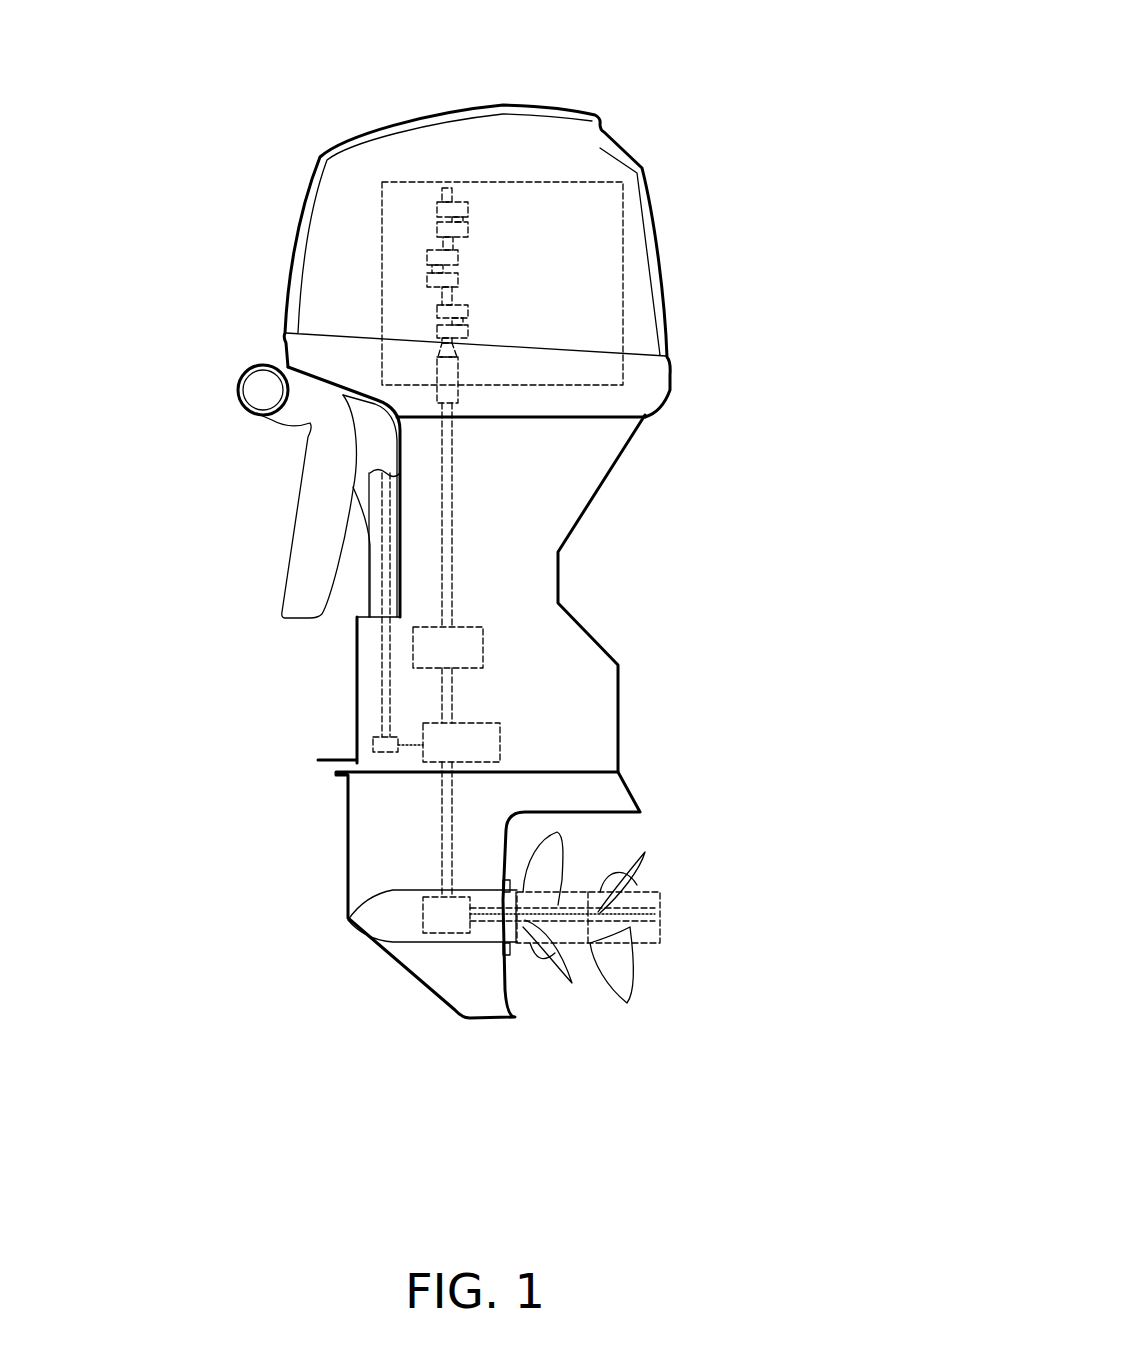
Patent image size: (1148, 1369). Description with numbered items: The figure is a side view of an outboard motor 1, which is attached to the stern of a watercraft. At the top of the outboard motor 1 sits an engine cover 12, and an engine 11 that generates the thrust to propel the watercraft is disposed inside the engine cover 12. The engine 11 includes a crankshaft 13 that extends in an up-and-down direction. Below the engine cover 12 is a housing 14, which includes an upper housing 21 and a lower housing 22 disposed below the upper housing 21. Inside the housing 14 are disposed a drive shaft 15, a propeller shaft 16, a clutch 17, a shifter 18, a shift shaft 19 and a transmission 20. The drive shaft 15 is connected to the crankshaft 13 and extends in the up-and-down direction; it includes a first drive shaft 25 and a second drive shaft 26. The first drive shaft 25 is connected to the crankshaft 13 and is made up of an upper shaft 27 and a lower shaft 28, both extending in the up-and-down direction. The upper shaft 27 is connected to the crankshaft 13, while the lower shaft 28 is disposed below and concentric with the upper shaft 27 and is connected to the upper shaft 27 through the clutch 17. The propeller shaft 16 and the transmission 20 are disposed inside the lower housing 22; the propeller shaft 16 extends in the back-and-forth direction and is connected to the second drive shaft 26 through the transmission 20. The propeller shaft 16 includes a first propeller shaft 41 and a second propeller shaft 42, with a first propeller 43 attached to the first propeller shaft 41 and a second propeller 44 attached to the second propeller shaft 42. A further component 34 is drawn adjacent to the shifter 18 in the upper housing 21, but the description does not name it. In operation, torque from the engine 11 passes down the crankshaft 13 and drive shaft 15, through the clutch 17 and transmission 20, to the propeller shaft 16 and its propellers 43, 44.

The outboard motor 1 is at (500, 567).
The engine 11 is at (410, 180).
The engine cover 12 is at (603, 148).
The crankshaft 13 is at (447, 190).
The housing 14 is at (561, 716).
The drive shaft 15 is at (591, 563).
The propeller shaft 16 is at (575, 972).
The clutch 17 is at (413, 645).
The shifter 18 is at (503, 743).
The shift shaft 19 is at (368, 543).
The transmission 20 is at (442, 937).
The upper housing 21 is at (593, 722).
The lower housing 22 is at (592, 797).
The first drive shaft 25 is at (591, 563).
The second drive shaft 26 is at (442, 799).
The upper shaft 27 is at (453, 597).
The lower shaft 28 is at (561, 669).
The auxiliary unit 34 is at (373, 744).
The first propeller shaft 41 is at (580, 927).
The second propeller shaft 42 is at (615, 927).
The first propeller 43 is at (533, 937).
The second propeller 44 is at (648, 933).